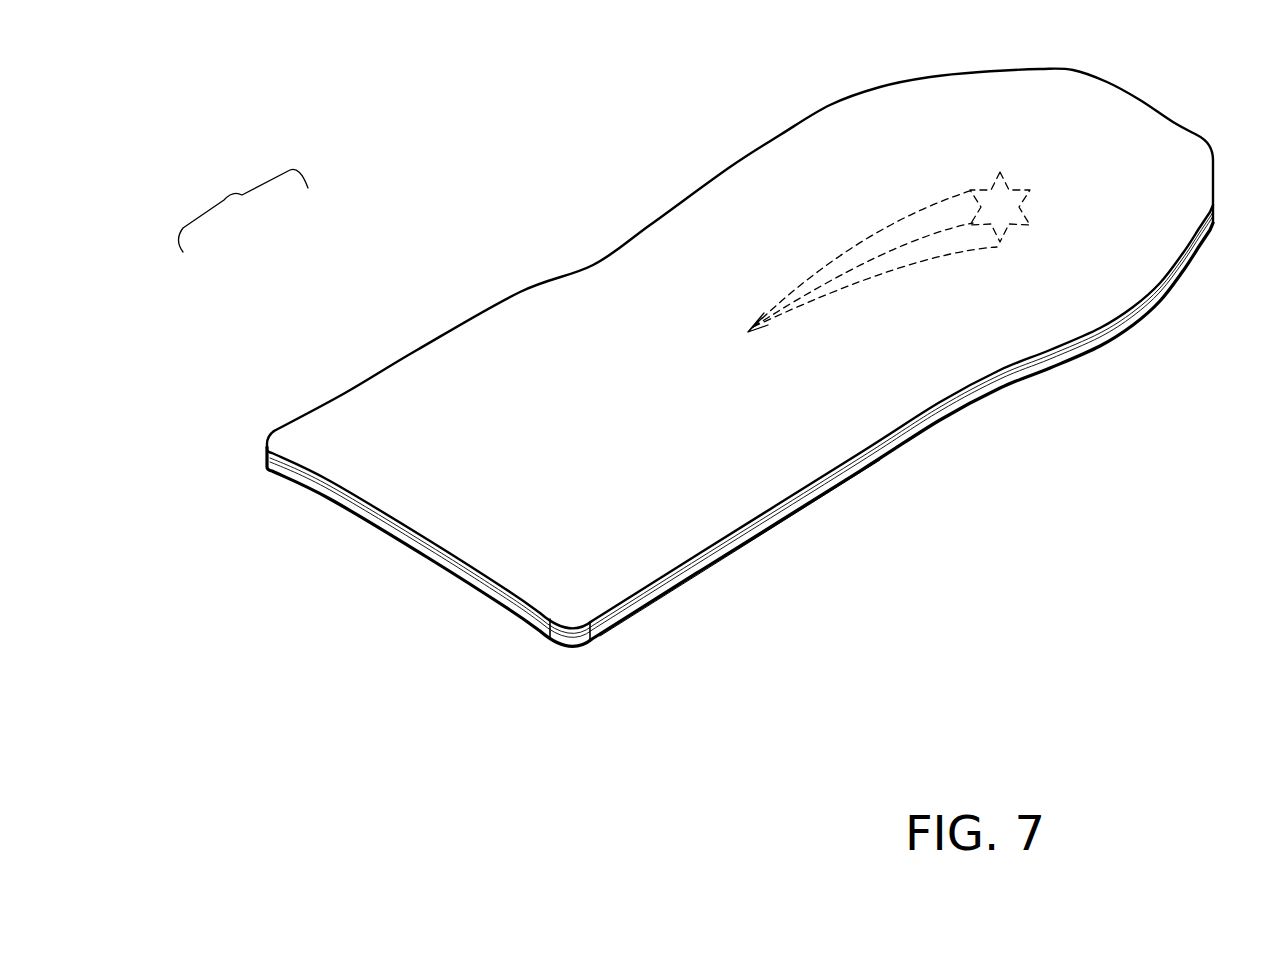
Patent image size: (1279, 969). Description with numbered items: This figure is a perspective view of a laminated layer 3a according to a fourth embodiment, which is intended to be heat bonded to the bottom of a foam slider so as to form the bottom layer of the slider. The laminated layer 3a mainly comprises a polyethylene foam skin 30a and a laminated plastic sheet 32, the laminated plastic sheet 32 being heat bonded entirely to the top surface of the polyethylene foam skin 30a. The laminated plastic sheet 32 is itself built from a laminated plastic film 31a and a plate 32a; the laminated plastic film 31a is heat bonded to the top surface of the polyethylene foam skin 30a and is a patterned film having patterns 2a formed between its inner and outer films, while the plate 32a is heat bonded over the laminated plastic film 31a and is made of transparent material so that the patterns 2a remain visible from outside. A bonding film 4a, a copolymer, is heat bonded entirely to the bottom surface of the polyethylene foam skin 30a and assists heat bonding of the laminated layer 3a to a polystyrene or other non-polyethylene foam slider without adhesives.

The patterns 2a is at (1020, 184).
The laminated layer 3a is at (573, 193).
The bonding film 4a is at (682, 587).
The polyethylene foam skin 30a is at (330, 493).
The laminated plastic film 31a is at (330, 496).
The laminated plastic sheet 32 is at (244, 198).
The plate 32a is at (421, 368).